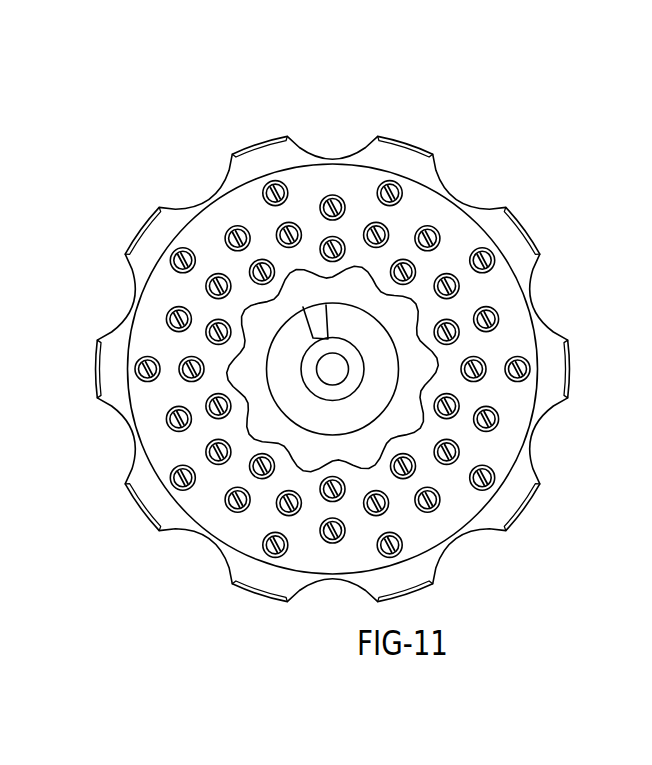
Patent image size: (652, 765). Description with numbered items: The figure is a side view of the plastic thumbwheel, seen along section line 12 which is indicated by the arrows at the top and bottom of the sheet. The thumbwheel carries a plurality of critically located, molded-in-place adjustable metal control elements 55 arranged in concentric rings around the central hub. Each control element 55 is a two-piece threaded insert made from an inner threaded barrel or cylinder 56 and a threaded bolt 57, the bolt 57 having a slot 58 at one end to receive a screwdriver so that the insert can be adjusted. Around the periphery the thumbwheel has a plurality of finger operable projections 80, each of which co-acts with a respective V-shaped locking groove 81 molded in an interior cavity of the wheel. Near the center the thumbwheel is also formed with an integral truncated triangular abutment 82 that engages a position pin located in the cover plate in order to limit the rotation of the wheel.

The section line 12- 12 is at (332, 625).
The control elements 55 is at (223, 513).
The inner threaded barrel 56 is at (498, 310).
The threaded bolt 57 is at (433, 227).
The slot 58 is at (493, 472).
The finger operable projections 80 is at (399, 157).
The V-shaped locking groove 81 is at (243, 373).
The integral abutment 82 is at (312, 315).